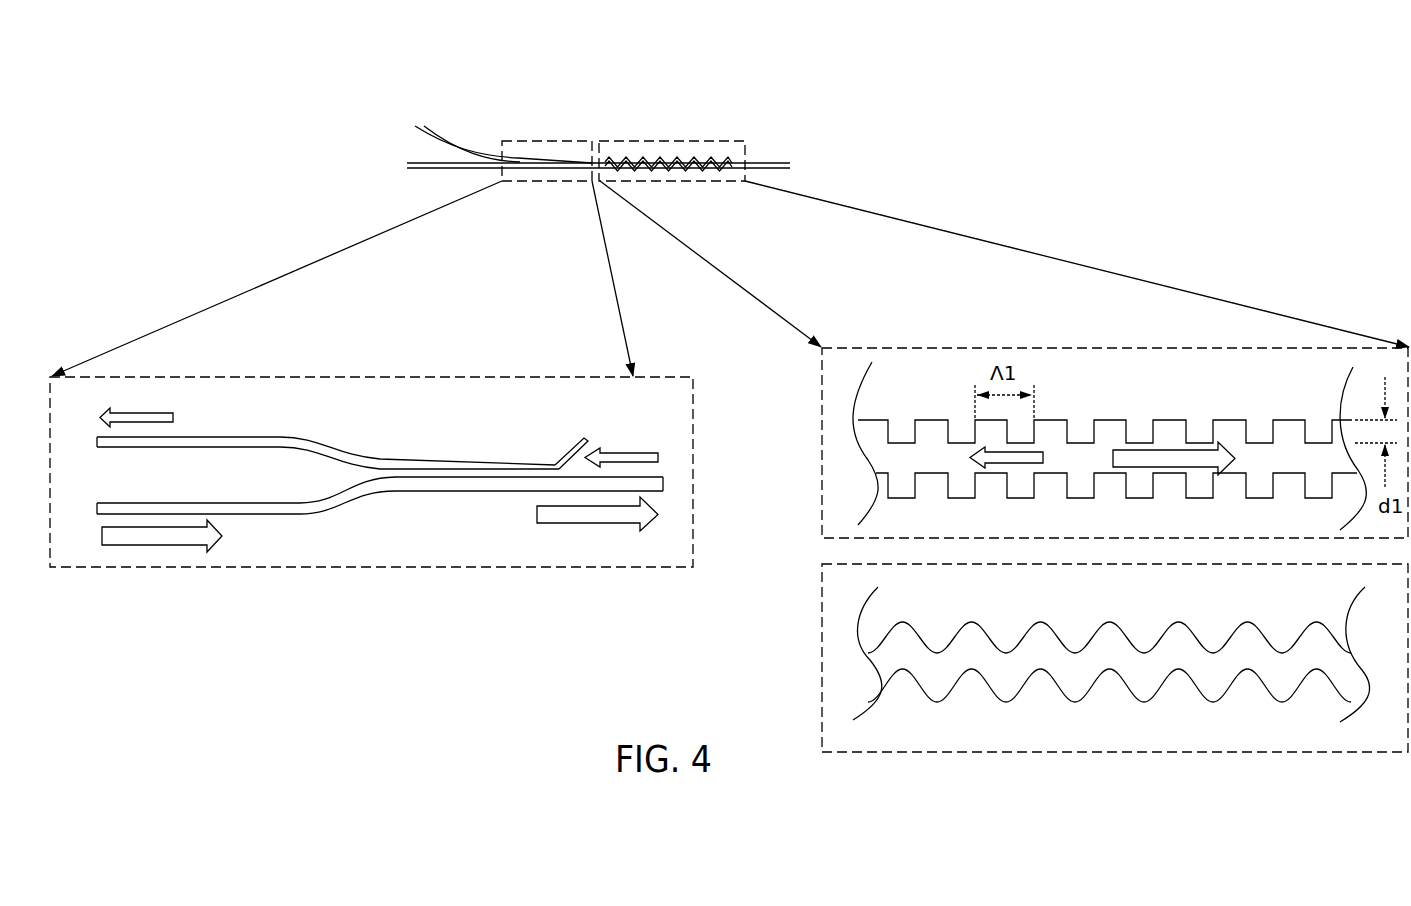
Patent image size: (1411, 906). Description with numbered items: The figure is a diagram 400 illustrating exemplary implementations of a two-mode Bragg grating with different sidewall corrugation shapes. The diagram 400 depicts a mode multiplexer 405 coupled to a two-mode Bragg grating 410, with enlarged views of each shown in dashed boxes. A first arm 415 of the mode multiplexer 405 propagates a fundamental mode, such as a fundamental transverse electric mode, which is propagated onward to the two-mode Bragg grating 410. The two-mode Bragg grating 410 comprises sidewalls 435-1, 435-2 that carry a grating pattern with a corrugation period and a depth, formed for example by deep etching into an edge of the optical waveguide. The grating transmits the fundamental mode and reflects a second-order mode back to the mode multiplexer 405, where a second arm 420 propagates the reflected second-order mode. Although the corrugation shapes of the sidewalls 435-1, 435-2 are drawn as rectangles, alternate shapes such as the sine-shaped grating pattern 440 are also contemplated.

The diagram 400 is at (875, 100).
The mode multiplexer 405 is at (555, 138).
The two-mode Bragg grating 410 is at (746, 138).
The first arm 415 is at (341, 497).
The second arm 420 is at (349, 444).
The sidewall 435-1 is at (856, 433).
The sidewall 435-2 is at (856, 486).
The grating pattern 440 is at (820, 656).